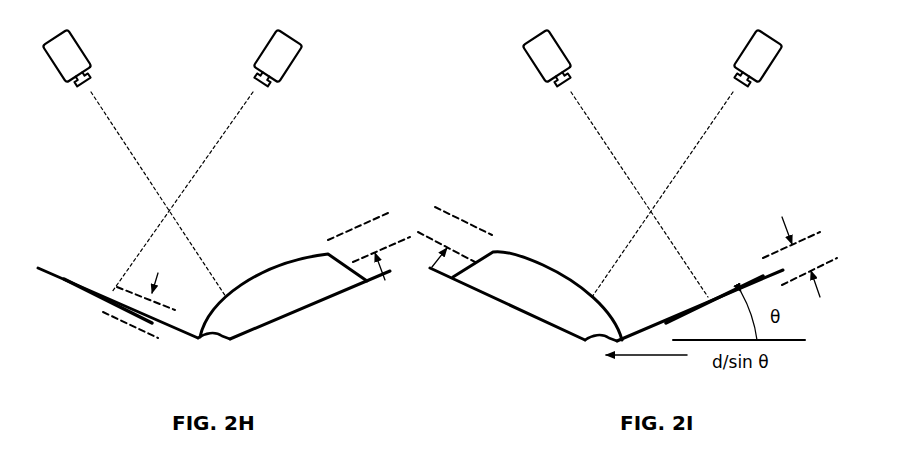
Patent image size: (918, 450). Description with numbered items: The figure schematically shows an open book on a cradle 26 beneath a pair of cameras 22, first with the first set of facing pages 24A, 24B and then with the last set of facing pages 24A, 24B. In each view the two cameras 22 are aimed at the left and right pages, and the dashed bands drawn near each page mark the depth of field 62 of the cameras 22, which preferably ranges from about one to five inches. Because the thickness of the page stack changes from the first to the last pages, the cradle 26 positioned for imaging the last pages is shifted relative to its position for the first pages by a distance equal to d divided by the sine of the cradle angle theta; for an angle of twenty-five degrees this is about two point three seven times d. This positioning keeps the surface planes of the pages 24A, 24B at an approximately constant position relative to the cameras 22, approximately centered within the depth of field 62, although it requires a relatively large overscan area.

In FIG. 2H, the cameras 22 is at (83, 47).
In FIG. 2I, the cameras 22 is at (563, 47).
In FIG. 2H, the facing page 24A is at (65, 278).
In FIG. 2I, the facing page 24A is at (550, 265).
In FIG. 2H, the facing page 24B is at (278, 267).
In FIG. 2I, the facing page 24B is at (739, 284).
In FIG. 2H, the cradle 26 is at (53, 282).
In FIG. 2I, the cradle 26 is at (437, 280).
In FIG. 2H, the depth of field 62 is at (132, 325).
In FIG. 2I, the depth of field 62 is at (463, 222).